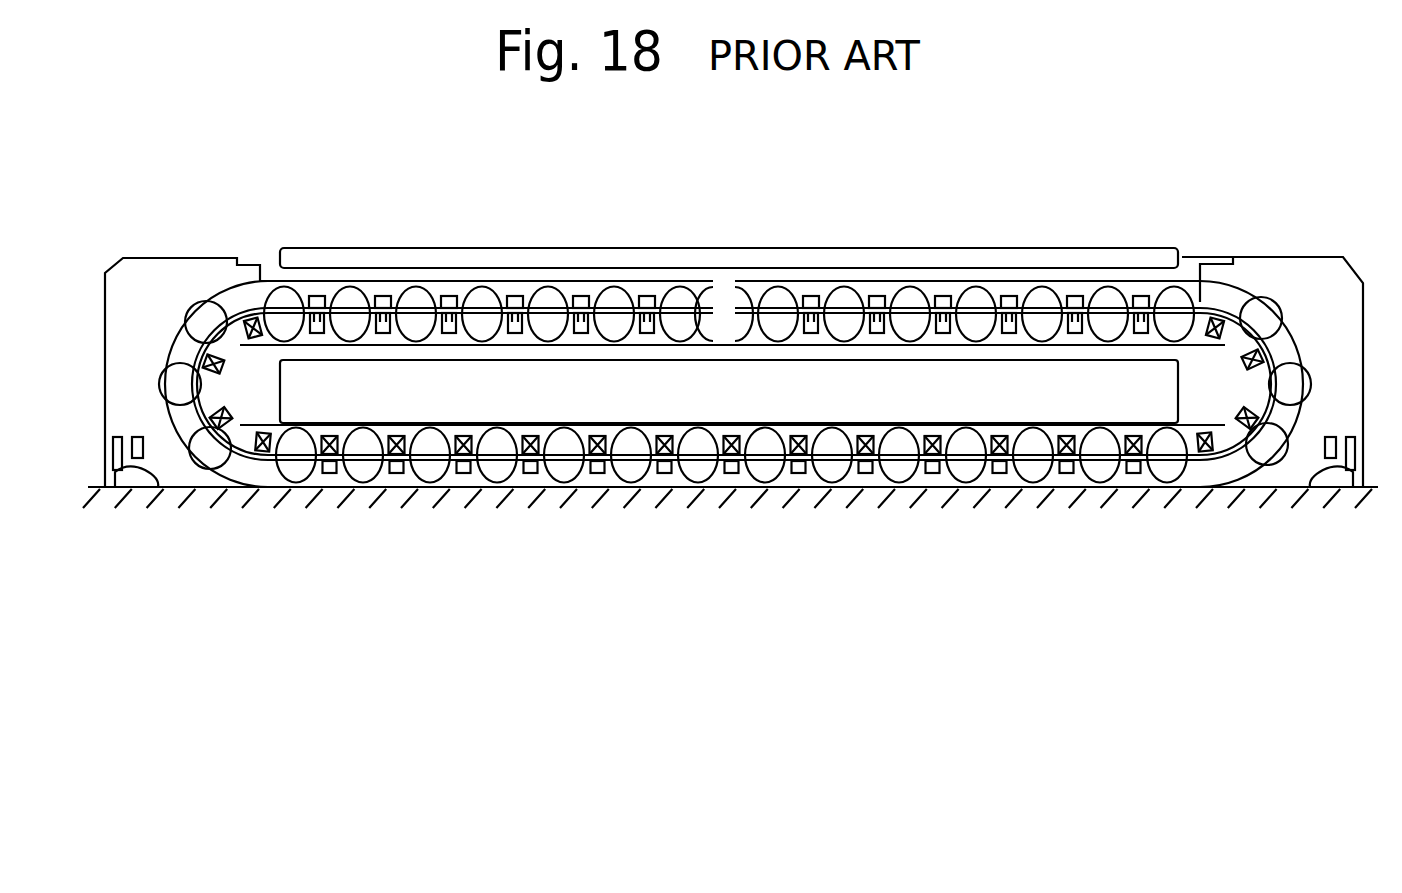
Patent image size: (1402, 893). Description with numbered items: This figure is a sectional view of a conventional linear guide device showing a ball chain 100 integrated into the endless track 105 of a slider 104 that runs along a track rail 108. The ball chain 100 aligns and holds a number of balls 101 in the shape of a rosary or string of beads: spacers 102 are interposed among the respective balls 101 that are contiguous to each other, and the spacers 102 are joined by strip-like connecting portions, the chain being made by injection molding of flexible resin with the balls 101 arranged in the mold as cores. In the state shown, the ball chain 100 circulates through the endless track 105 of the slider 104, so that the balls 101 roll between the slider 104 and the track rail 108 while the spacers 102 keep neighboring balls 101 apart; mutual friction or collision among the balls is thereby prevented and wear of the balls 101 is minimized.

The ball chain 100 is at (1236, 284).
The balls 101 is at (1052, 300).
The spacers 102 is at (646, 302).
The slider 104 is at (905, 238).
The endless track 105 is at (447, 290).
The track rail 108 is at (1152, 498).